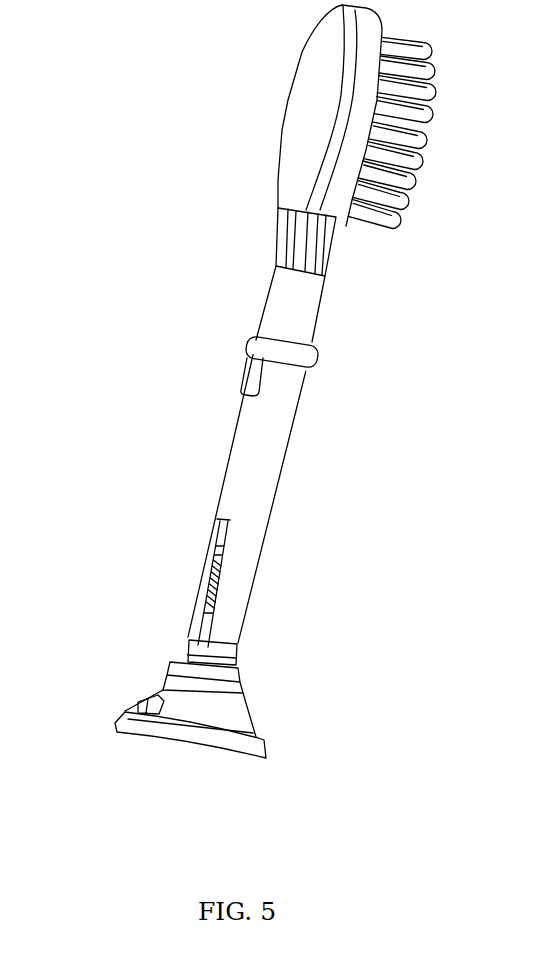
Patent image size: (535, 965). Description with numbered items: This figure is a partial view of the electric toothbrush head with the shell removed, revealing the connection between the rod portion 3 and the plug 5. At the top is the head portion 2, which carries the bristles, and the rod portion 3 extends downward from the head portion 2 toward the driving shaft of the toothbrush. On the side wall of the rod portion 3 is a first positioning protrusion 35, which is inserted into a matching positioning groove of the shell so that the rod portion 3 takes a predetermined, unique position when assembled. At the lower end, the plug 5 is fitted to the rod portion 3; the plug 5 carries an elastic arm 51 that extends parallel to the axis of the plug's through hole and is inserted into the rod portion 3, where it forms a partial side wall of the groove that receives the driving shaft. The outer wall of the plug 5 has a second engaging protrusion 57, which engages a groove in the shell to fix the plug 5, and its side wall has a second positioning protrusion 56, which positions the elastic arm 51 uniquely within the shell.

The head portion 2 is at (300, 140).
The rod portion 3 is at (362, 480).
The first positioning protrusion 35 is at (242, 373).
The plug 5 is at (332, 720).
The elastic arm 51 is at (212, 569).
The second positioning protrusion 56 is at (140, 698).
The second engaging protrusion 57 is at (285, 673).